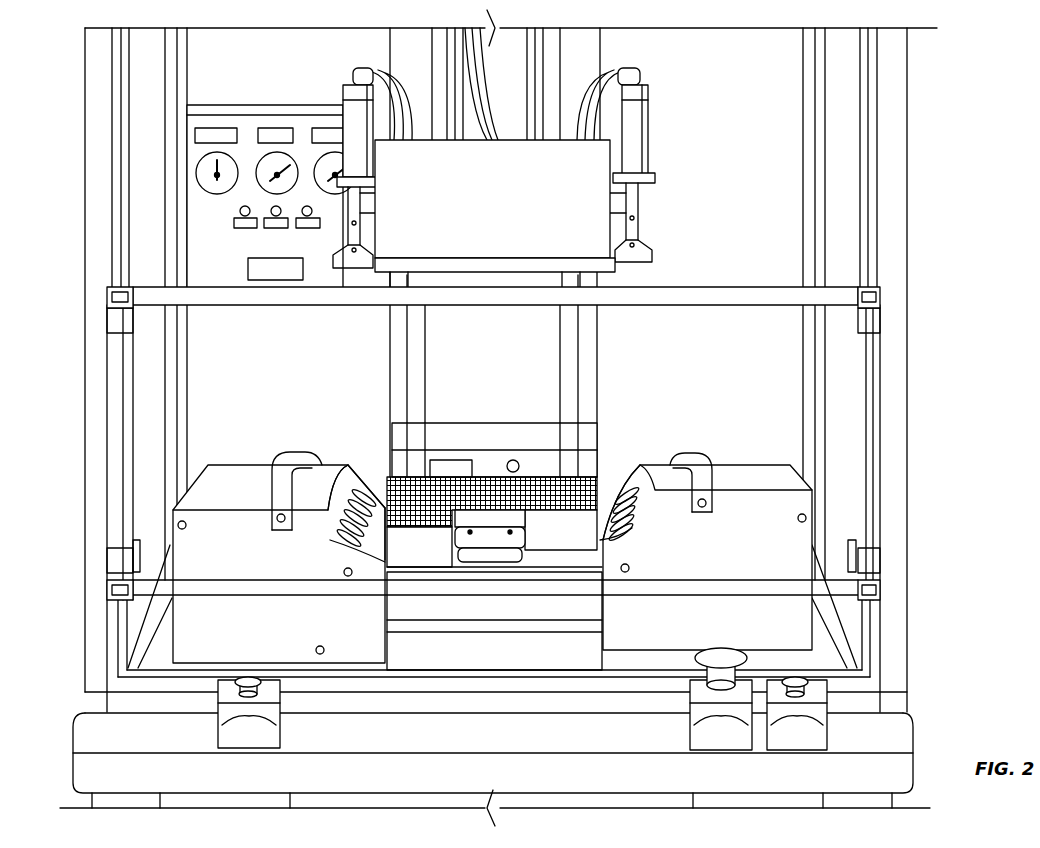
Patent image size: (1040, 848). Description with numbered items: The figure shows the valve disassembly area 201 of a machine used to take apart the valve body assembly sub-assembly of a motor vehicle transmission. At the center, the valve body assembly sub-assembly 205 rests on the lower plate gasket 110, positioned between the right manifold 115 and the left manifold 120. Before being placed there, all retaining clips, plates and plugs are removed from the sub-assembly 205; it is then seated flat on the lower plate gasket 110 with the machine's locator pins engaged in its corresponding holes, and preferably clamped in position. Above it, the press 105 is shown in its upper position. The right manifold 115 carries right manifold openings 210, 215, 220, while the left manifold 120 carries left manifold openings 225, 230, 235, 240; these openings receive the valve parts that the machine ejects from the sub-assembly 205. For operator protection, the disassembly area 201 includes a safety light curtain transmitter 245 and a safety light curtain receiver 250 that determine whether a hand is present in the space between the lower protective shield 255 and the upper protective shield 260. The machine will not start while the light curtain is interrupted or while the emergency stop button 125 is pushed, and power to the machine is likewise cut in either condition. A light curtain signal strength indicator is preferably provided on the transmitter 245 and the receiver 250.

The valve disassembly area 201 is at (938, 104).
The upper protective shield 260 is at (136, 147).
The press 105 is at (590, 211).
The safety light curtain transmitter 245 is at (113, 532).
The safety light curtain receiver 250 is at (873, 533).
The lower protective shield 255 is at (132, 648).
The left manifold 120 is at (232, 476).
The right manifold 115 is at (742, 477).
The left manifold opening 225 is at (372, 500).
The left manifold opening 230 is at (335, 492).
The left manifold opening 235 is at (350, 508).
The left manifold opening 240 is at (352, 532).
The right manifold opening 210 is at (619, 493).
The right manifold opening 215 is at (655, 487).
The right manifold opening 220 is at (633, 517).
The valve body assembly sub-assembly 205 is at (440, 480).
The lower plate gasket 110 is at (560, 567).
The emergency stop button 125 is at (721, 648).